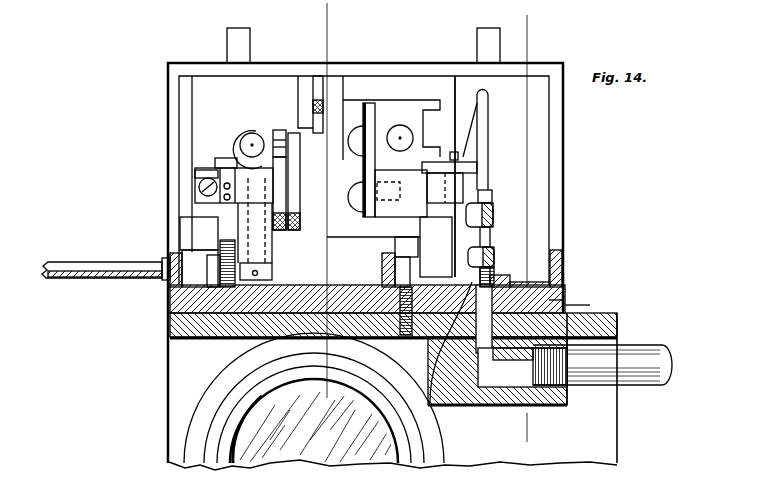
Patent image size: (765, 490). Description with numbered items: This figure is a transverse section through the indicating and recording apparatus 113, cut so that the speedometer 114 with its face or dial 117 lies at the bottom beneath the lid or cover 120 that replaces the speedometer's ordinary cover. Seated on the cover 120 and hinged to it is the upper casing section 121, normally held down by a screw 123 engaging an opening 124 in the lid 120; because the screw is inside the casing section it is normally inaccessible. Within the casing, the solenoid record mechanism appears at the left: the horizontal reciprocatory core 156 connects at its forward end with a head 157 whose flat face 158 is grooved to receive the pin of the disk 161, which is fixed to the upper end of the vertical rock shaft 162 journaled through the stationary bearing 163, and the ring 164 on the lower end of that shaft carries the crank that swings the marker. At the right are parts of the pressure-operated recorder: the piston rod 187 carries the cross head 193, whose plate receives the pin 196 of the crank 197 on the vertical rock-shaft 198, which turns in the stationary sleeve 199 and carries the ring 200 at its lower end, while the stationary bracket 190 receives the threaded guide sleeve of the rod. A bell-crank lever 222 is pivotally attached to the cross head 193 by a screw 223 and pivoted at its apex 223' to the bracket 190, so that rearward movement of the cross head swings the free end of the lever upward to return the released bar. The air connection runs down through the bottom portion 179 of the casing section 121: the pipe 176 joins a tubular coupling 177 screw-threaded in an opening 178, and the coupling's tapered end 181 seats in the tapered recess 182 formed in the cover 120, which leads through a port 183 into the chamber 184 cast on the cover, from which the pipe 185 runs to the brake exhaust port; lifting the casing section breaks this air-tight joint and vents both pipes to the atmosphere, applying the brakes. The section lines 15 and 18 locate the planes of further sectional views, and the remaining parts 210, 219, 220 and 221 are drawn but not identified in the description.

The section line 15- 15 is at (517, 27).
The section line 18- 18 is at (318, 27).
The indicating and recording apparatus 113 is at (168, 437).
The speedometer 114 is at (617, 432).
The face or dial 117 is at (314, 405).
The lid or cover 120 is at (170, 333).
The upper casing section 121 is at (563, 100).
The screw 123 is at (400, 240).
The opening 124 is at (398, 338).
The horizontal reciprocatory core 156 is at (235, 132).
The head 157 is at (232, 140).
The flat face 158 is at (232, 150).
The disk 161 is at (205, 190).
The vertical rock shaft 162 is at (245, 230).
The stationary bearing 163 is at (245, 233).
The ring 164 is at (272, 270).
The pipe 176 is at (478, 119).
The tubular coupling 177 is at (562, 285).
The opening 178 is at (560, 302).
The bottom portion 179 is at (575, 307).
The tapered end 181 is at (618, 320).
The tapered recess 182 is at (432, 400).
The port 183 is at (496, 370).
The chamber 184 is at (478, 388).
The pipe 185 is at (628, 378).
The piston rod 187 is at (400, 136).
The stationary bracket 190 is at (450, 141).
The cross head 193 is at (406, 128).
The pin 196 is at (448, 143).
The crank 197 is at (467, 180).
The vertical rock-shaft 198 is at (463, 195).
The stationary sleeve 199 is at (493, 215).
The ring 200 is at (494, 250).
The bracket 210 is at (313, 86).
The nut 219 is at (287, 132).
The spring bar 220 is at (300, 208).
The spring bar 221 is at (279, 153).
The bell-crank lever 222 is at (345, 157).
The screw 223 is at (351, 146).
The pivot 223' is at (345, 204).